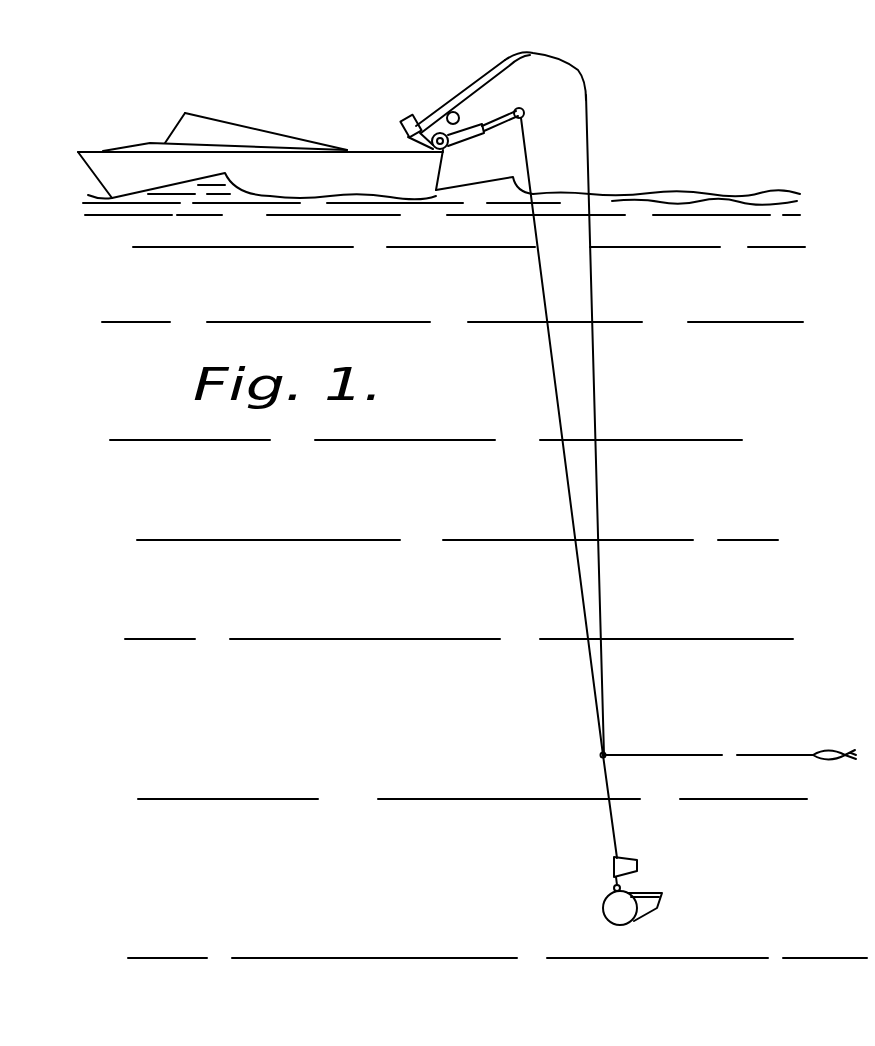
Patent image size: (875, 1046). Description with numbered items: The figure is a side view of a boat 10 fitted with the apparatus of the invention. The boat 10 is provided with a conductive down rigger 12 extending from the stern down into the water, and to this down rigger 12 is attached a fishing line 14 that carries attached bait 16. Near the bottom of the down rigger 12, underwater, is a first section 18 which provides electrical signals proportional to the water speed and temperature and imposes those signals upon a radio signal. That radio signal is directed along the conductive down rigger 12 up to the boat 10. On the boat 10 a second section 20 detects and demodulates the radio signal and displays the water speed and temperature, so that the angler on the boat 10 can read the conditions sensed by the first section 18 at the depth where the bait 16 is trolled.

The boat 10 is at (141, 158).
The conductive down rigger 12 is at (567, 490).
The fishing line 14 is at (598, 475).
The bait 16 is at (827, 751).
The first section 18 is at (614, 865).
The second section 20 is at (402, 119).